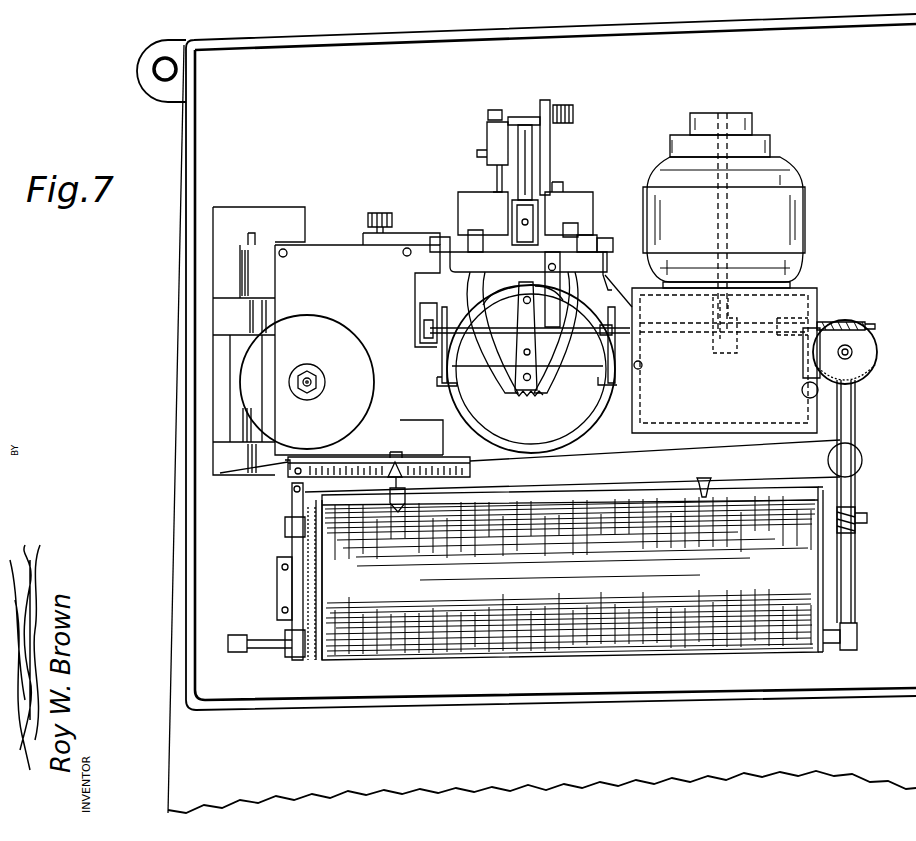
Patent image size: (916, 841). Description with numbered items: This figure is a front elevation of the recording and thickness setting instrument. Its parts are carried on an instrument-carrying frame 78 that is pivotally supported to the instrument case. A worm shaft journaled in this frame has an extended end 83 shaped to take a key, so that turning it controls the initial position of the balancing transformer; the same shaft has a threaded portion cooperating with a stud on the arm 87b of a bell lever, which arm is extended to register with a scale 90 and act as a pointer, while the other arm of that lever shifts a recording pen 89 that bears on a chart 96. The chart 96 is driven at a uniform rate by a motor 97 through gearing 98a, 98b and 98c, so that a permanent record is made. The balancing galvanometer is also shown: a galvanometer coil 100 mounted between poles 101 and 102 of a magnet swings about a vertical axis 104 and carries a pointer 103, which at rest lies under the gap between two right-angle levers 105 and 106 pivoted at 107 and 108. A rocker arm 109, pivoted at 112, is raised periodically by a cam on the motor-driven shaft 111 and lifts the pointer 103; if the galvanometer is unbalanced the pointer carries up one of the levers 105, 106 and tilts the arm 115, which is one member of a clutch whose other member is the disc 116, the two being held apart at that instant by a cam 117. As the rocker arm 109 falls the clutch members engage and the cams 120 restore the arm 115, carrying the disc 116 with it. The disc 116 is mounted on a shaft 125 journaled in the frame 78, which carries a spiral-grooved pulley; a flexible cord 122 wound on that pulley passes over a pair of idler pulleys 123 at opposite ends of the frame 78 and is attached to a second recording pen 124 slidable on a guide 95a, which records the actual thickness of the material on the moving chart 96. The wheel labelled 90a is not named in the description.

The instrument-carrying frame 78 is at (607, 281).
The extended end of shaft 83 is at (290, 464).
The arm of bell lever 87b is at (397, 473).
The recording pen 89 is at (392, 506).
The scale 90 is at (312, 490).
The pulley wheel 90a is at (240, 393).
The guide 95a is at (597, 495).
The chart 96 is at (407, 653).
The motor 97 is at (805, 208).
The gearing 98a is at (737, 353).
The gearing 98b is at (866, 372).
The gearing 98c is at (860, 511).
The galvanometer coil 100 is at (540, 208).
The pole of magnet 101 is at (563, 208).
The pole of magnet 102 is at (493, 208).
The galvanometer pointer 103 is at (502, 238).
The vertical axis 104 is at (530, 148).
The right-angle lever 105 is at (565, 228).
The right-angle lever 106 is at (450, 228).
The pivot 107 is at (565, 272).
The pivot 108 is at (475, 252).
The rocker arm 109 is at (573, 237).
The motor-driven shaft 111 is at (467, 322).
The pivot of rocker arm 112 is at (606, 238).
The arm 115 is at (568, 362).
The disc 116 is at (594, 409).
The cam 117 is at (517, 298).
The cams 120 is at (442, 353).
The flexible cord 122 is at (590, 455).
The idler pulleys 123 is at (290, 478).
The second recording pen 124 is at (709, 479).
The shaft 125 is at (525, 391).